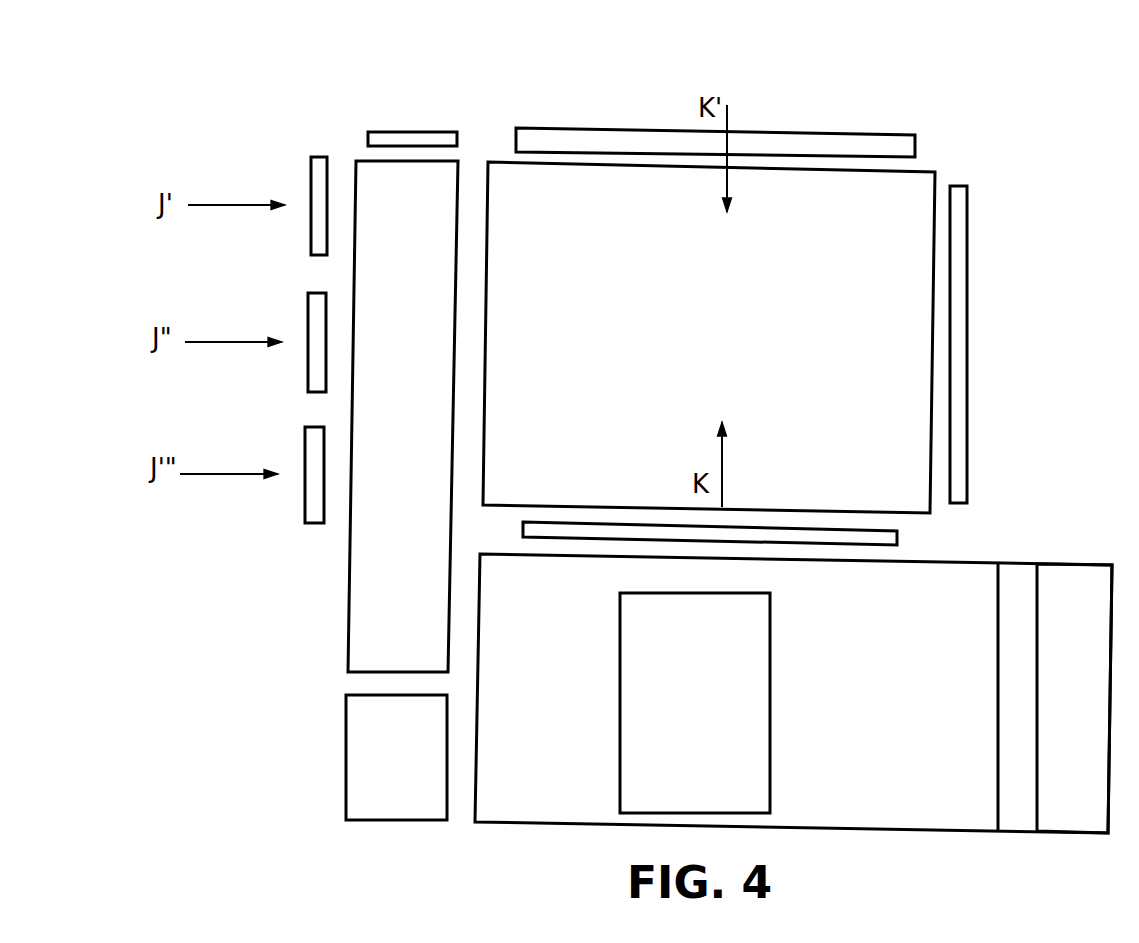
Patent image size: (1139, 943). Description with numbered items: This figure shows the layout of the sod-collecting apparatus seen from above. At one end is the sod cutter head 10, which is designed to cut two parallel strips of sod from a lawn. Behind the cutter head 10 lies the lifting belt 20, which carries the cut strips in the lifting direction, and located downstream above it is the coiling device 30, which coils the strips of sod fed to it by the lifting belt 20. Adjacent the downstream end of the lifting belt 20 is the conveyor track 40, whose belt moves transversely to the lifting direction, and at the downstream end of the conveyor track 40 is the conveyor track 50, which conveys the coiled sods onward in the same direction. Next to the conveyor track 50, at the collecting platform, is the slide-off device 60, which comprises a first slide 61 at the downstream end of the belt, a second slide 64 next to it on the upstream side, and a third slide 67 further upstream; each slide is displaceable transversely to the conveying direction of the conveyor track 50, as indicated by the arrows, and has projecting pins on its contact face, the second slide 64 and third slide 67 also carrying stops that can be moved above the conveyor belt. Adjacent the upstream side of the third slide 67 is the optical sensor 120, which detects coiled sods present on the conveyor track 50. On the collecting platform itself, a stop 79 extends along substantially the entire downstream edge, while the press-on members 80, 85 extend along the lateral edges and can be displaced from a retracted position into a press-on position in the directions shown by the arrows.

The sod cutter head 10 is at (1090, 781).
The lifting belt 20 is at (908, 716).
The coiling device 30 is at (708, 759).
The conveyor track 40 is at (409, 780).
The conveyor track 50 is at (413, 633).
The slide-off device 60 is at (273, 167).
The first slide 61 is at (323, 170).
The second slide 64 is at (317, 322).
The third slide 67 is at (317, 505).
The stop 79 is at (960, 257).
The press-on member 80 is at (877, 537).
The press-on member 85 is at (895, 150).
The optical sensor 120 is at (323, 547).